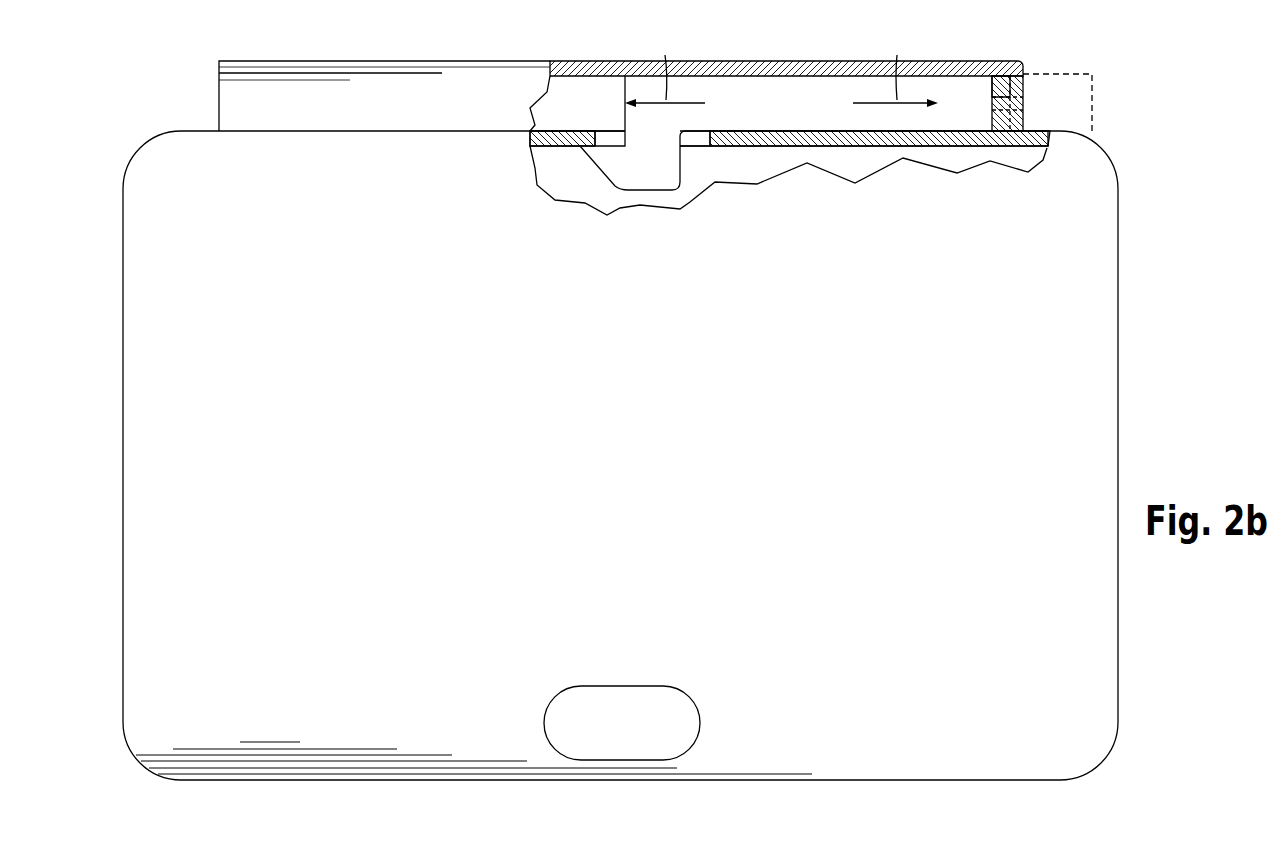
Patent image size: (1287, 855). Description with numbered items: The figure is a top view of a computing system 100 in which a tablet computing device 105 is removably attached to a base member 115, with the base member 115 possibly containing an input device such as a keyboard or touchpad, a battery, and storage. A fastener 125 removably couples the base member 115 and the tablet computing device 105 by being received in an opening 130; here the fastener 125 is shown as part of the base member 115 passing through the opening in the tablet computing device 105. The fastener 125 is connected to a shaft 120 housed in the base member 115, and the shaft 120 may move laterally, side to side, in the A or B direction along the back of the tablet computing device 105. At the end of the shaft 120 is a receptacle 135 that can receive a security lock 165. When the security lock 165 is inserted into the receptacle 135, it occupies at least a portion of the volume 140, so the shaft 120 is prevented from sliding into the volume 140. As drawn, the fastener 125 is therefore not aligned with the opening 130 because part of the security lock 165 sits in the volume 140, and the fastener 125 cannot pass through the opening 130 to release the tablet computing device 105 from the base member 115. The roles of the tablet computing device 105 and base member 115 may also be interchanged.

The computing system 100 is at (100, 107).
The tablet computing device 105 is at (1120, 246).
The base member 115 is at (403, 61).
The shaft 120 is at (800, 116).
The fastener 125 is at (620, 192).
The opening 130 is at (687, 146).
The receptacle 135 is at (1023, 80).
The volume 140 is at (1000, 72).
The security lock 165 is at (1092, 98).